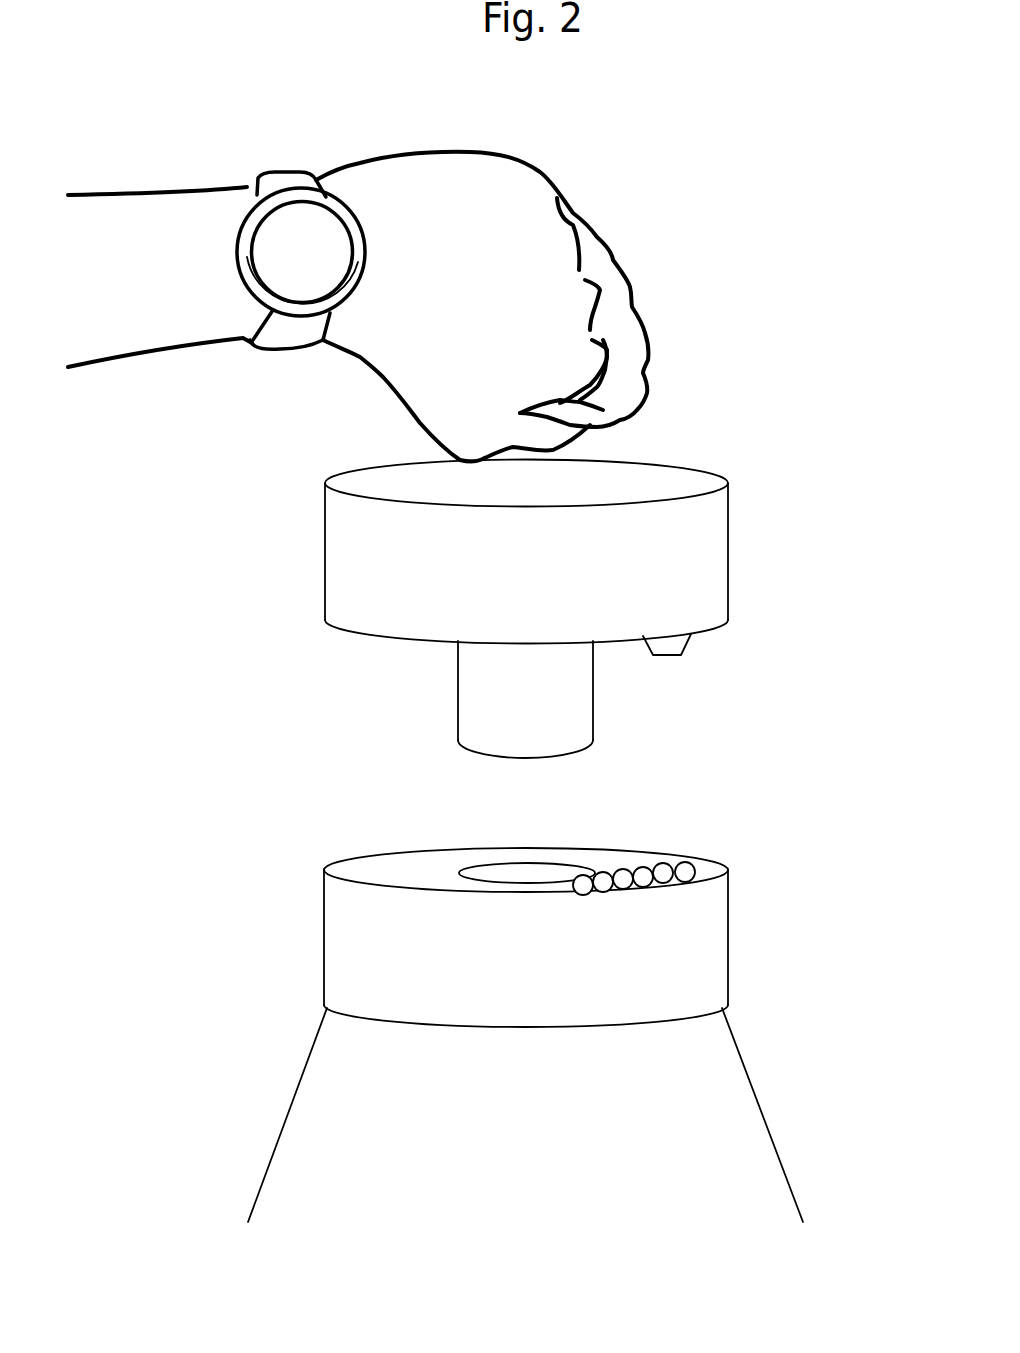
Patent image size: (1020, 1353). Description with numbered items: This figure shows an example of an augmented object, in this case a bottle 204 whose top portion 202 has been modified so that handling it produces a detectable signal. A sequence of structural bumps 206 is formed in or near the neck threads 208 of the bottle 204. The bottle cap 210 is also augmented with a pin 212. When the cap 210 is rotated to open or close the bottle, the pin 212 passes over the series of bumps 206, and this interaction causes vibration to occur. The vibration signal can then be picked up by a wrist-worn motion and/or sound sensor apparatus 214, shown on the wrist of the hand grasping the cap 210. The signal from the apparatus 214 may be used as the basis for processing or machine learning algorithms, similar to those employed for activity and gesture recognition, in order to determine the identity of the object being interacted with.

The top portion 202 is at (723, 925).
The bottle 204 is at (763, 1113).
The structural bumps 206 is at (670, 867).
The neck threads 208 is at (495, 872).
The bottle cap 210 is at (645, 478).
The pin 212 is at (690, 636).
The wrist-worn motion and/or sound sensor apparatus 214 is at (298, 217).